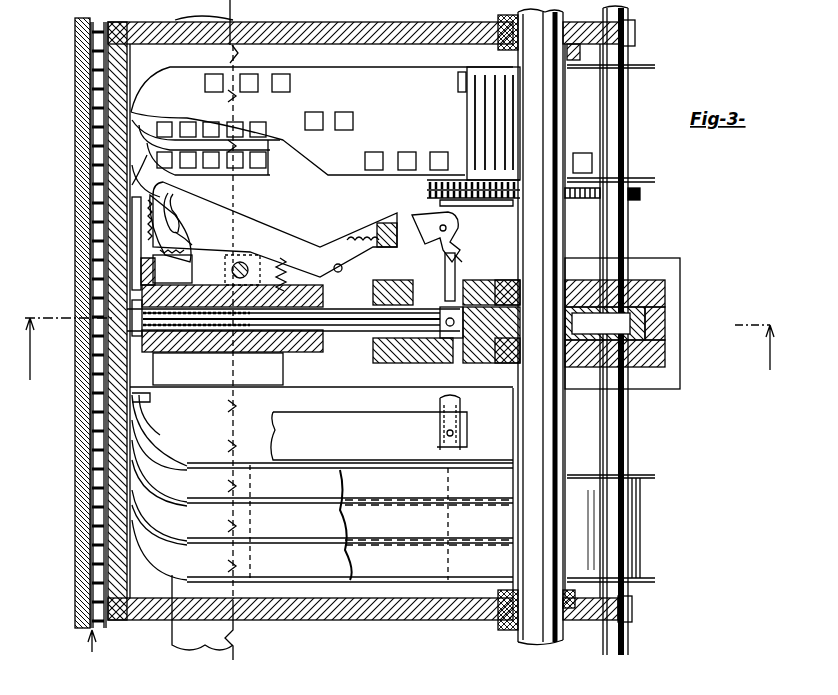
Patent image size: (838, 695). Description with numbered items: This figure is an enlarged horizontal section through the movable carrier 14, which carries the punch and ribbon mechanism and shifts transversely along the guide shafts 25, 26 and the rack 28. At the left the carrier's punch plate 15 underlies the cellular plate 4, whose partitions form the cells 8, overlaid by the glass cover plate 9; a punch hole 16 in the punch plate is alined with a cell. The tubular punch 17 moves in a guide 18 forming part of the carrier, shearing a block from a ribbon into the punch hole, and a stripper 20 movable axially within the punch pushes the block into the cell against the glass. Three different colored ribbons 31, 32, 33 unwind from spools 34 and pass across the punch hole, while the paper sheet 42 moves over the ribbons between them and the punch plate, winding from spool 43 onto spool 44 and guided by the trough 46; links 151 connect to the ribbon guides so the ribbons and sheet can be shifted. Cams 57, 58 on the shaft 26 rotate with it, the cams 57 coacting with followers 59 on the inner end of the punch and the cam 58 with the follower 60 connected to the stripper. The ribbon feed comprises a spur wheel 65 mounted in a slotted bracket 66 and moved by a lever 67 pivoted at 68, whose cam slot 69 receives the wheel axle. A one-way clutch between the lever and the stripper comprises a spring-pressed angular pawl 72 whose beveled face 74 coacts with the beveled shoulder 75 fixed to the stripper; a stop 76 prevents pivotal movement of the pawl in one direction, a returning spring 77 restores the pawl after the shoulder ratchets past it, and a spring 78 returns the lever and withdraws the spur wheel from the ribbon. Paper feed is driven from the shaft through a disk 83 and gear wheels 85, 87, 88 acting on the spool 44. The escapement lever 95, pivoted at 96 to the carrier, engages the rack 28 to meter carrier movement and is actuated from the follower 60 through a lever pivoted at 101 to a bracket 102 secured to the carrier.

The cellular plate 4 is at (395, 496).
The cells 8 is at (94, 358).
The cover plate 9 is at (77, 400).
The carrier 14 is at (408, 620).
The punch plate 15 is at (116, 580).
The punch hole 16 is at (128, 318).
The punch 17 is at (170, 352).
The punch guide 18 is at (205, 345).
The stripper 20 is at (292, 352).
The shaft 25 is at (625, 648).
The shaft 26 is at (540, 642).
The rack 28 is at (237, 642).
The colored ribbon 31 is at (350, 554).
The colored ribbon 32 is at (350, 516).
The colored ribbon 33 is at (350, 480).
The spools 34 is at (300, 598).
The paper sheet 42 is at (312, 170).
The spool 43 is at (655, 460).
The spool 44 is at (645, 66).
The trough or guide 46 is at (160, 420).
The cams 57 is at (595, 290).
The cam 58 is at (595, 320).
The followers 59 is at (475, 356).
The follower 60 is at (462, 328).
The spur wheel 65 is at (183, 227).
The bracket 66 is at (190, 270).
The lever 67 is at (295, 232).
The pivot 68 is at (340, 272).
The cam slot 69 is at (185, 232).
The angular pawl 72 is at (432, 214).
The beveled face 74 is at (432, 258).
The beveled shoulder 75 is at (455, 265).
The stop 76 is at (462, 248).
The returning spring 77 is at (400, 212).
The spring 78 is at (285, 262).
The disk 83 is at (578, 60).
The gear wheel 85 is at (470, 180).
The gear wheel 87 is at (430, 180).
The gear wheel 88 is at (640, 194).
The escapement lever 95 is at (248, 192).
The pivot 96 is at (252, 262).
The pivot 101 is at (445, 433).
The bracket 102 is at (468, 428).
The links 151 is at (150, 398).